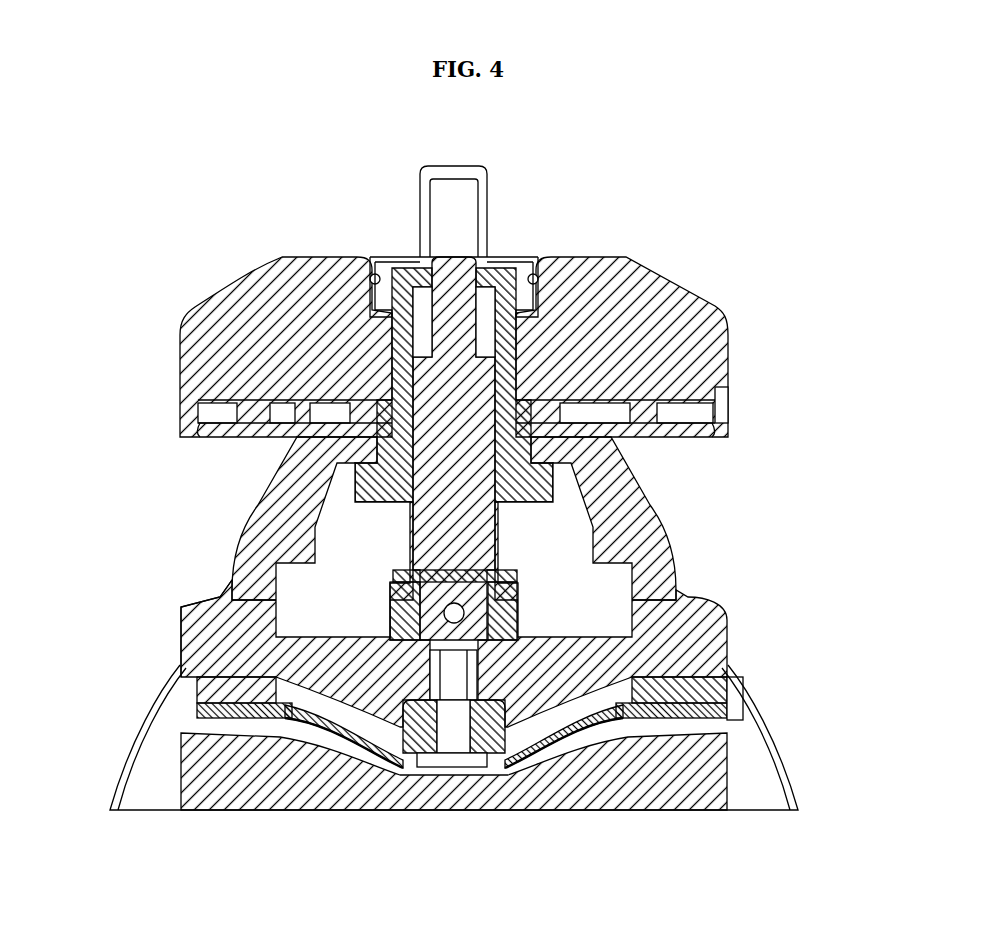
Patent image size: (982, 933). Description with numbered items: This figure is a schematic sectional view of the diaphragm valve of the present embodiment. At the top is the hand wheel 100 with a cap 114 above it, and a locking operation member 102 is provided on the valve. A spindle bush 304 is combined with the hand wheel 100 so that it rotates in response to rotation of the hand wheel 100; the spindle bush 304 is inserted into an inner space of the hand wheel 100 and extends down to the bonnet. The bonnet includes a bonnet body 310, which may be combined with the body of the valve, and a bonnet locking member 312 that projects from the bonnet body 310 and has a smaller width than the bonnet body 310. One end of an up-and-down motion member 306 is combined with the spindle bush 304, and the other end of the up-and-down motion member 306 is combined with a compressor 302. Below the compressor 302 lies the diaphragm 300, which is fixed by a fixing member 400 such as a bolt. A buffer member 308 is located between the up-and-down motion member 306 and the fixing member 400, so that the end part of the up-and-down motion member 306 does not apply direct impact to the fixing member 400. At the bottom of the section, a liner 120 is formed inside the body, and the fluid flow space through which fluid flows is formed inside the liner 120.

The hand wheel 100 is at (670, 290).
The locking operation member 102 is at (727, 407).
The cap 114 is at (487, 190).
The liner 120 is at (757, 730).
The diaphragm 300 is at (747, 693).
The compressor 302 is at (700, 605).
The spindle bush 304 is at (533, 487).
The up-and-down motion member 306 is at (445, 390).
The buffer member 308 is at (500, 665).
The bonnet body 310 is at (193, 622).
The bonnet locking member 312 is at (248, 528).
The fixing member 400 is at (452, 767).